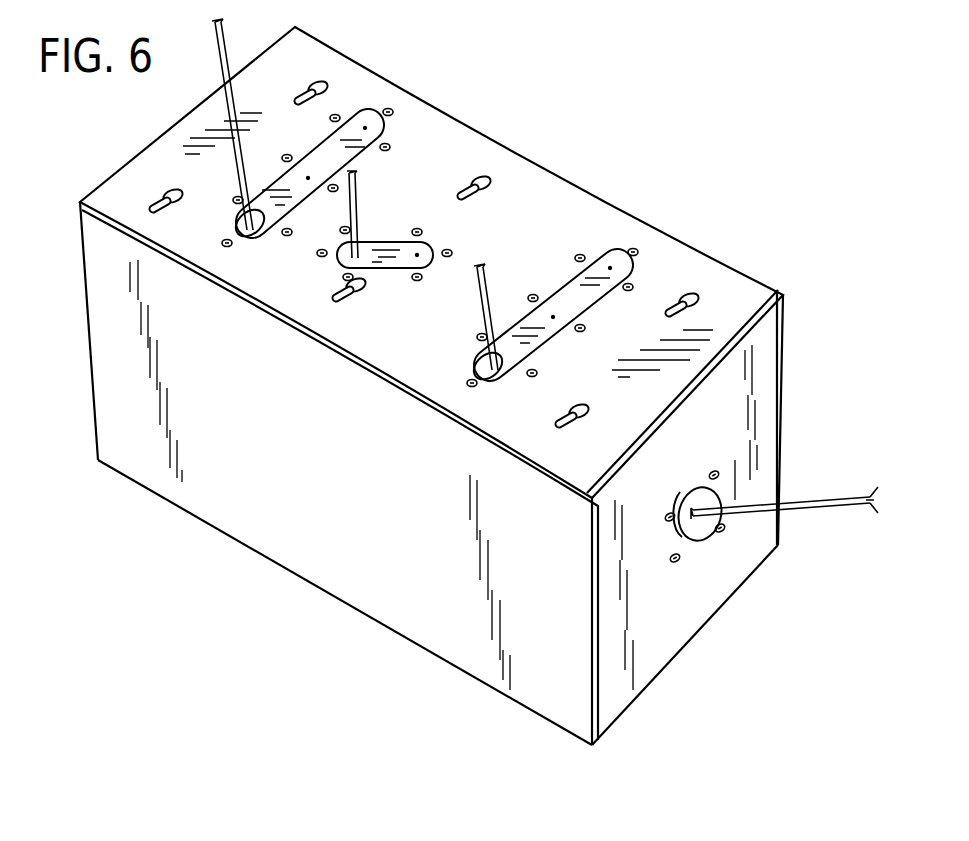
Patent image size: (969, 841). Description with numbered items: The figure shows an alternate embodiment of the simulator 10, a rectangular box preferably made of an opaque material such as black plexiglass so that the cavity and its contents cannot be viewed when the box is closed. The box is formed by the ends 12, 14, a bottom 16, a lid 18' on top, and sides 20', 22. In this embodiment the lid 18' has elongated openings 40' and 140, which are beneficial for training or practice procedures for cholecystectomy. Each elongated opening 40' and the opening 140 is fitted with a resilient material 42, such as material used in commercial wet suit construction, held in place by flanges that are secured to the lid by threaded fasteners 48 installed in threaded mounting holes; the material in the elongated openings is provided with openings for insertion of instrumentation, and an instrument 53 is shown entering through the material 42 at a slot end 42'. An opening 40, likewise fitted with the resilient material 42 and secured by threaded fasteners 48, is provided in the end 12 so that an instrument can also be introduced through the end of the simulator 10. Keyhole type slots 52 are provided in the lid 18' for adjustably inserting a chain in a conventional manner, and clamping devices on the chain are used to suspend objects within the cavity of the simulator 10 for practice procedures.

The simulator 10 is at (68, 153).
The end 12 is at (745, 418).
The end 14 is at (92, 385).
The bottom 16 is at (660, 668).
The lid 18' is at (448, 245).
The side 20' is at (320, 475).
The side 22 is at (786, 375).
The opening 40 is at (784, 544).
The elongated opening 40' is at (434, 237).
The resilient material 42 is at (700, 493).
The slot end 42' is at (341, 294).
The threaded fastener 48 is at (238, 200).
The keyhole type slot 52 is at (310, 84).
The instrument 53 is at (232, 62).
The elongated opening 140 is at (381, 262).